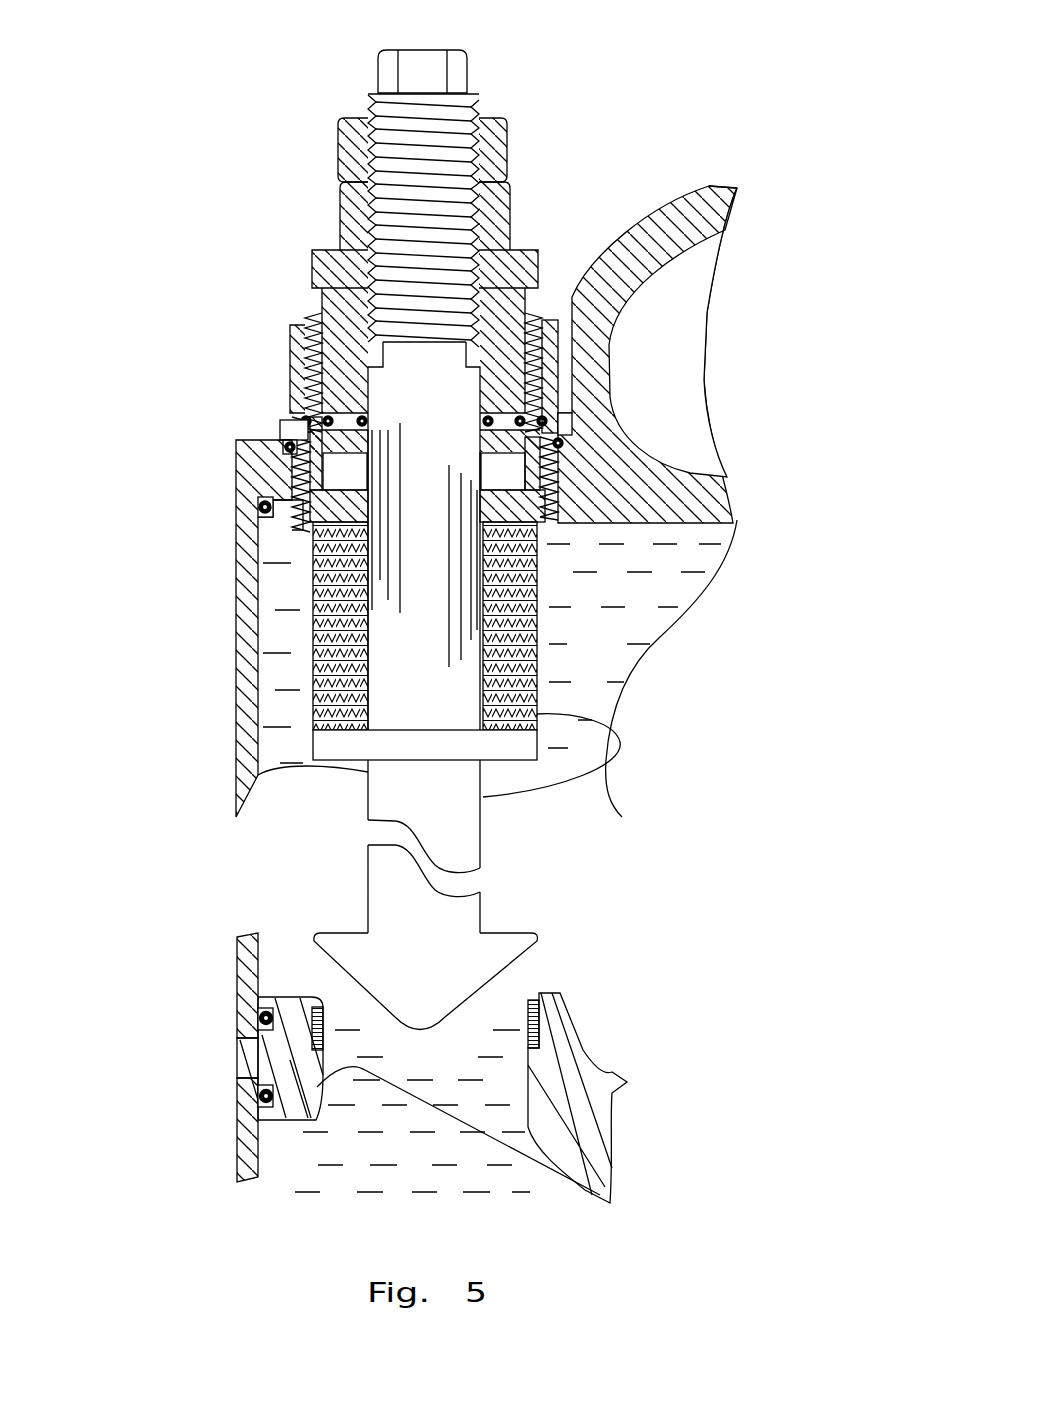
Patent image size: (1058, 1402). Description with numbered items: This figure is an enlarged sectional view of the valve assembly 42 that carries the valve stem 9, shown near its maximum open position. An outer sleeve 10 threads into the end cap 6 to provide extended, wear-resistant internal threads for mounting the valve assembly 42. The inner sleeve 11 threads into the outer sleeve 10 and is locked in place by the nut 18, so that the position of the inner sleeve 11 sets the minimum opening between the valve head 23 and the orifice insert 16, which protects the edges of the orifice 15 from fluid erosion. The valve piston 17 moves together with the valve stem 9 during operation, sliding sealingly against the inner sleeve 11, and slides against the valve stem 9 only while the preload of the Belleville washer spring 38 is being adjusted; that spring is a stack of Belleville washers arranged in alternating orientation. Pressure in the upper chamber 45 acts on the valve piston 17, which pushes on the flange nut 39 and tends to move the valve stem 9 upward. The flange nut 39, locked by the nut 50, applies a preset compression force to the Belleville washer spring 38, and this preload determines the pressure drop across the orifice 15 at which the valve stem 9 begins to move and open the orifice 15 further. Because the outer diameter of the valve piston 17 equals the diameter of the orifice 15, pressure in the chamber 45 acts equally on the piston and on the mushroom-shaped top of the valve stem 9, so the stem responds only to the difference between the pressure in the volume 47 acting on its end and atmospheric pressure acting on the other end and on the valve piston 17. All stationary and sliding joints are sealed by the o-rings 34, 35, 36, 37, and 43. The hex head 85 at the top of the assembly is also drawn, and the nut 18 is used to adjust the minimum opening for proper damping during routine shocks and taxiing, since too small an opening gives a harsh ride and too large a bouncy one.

The hex head of adjusting bolt 85 is at (453, 68).
The nut 50 is at (336, 157).
The flange nut 39 is at (323, 250).
The valve assembly 42 is at (289, 273).
The nut 18 is at (288, 343).
The o-ring 36 is at (290, 413).
The inner sleeve 11 is at (286, 423).
The o-ring 34 is at (262, 507).
The valve piston 17 is at (548, 316).
The end cap 6 is at (710, 186).
The o-ring 35 is at (558, 443).
The o-ring 43 is at (548, 497).
The o-ring 37 is at (540, 510).
The outer sleeve 10 is at (613, 583).
The upper chamber 45 is at (613, 583).
The Belleville washer spring 38 is at (610, 681).
The valve stem 9 is at (460, 843).
The valve head 23 is at (357, 948).
The orifice 15 is at (452, 1052).
The orifice insert 16 is at (552, 1003).
The volume 47 is at (277, 1168).